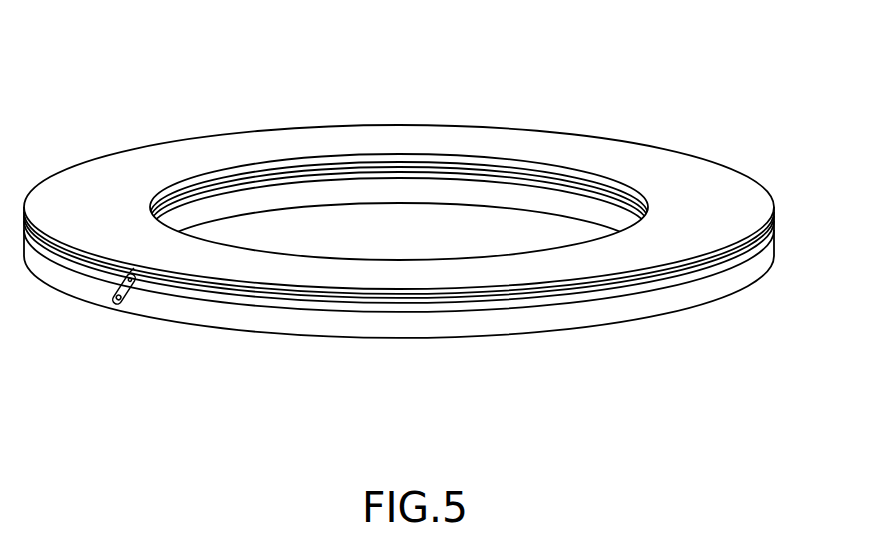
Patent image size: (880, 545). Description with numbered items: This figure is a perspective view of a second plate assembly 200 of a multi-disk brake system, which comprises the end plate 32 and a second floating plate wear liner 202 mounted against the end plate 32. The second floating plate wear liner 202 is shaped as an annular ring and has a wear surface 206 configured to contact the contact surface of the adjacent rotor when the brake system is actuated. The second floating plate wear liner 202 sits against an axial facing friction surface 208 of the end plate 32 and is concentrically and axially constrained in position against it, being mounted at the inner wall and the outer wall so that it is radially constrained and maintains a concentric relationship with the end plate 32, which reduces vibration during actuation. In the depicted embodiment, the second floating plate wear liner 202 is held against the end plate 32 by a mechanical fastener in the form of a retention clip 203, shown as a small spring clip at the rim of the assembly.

The second plate assembly 200 is at (436, 205).
The second floating plate wear liner 202 is at (713, 182).
The wear surface 206 is at (748, 210).
The axial facing friction surface 208 is at (557, 310).
The end plate 32 is at (672, 314).
The retention clip 203 is at (127, 306).